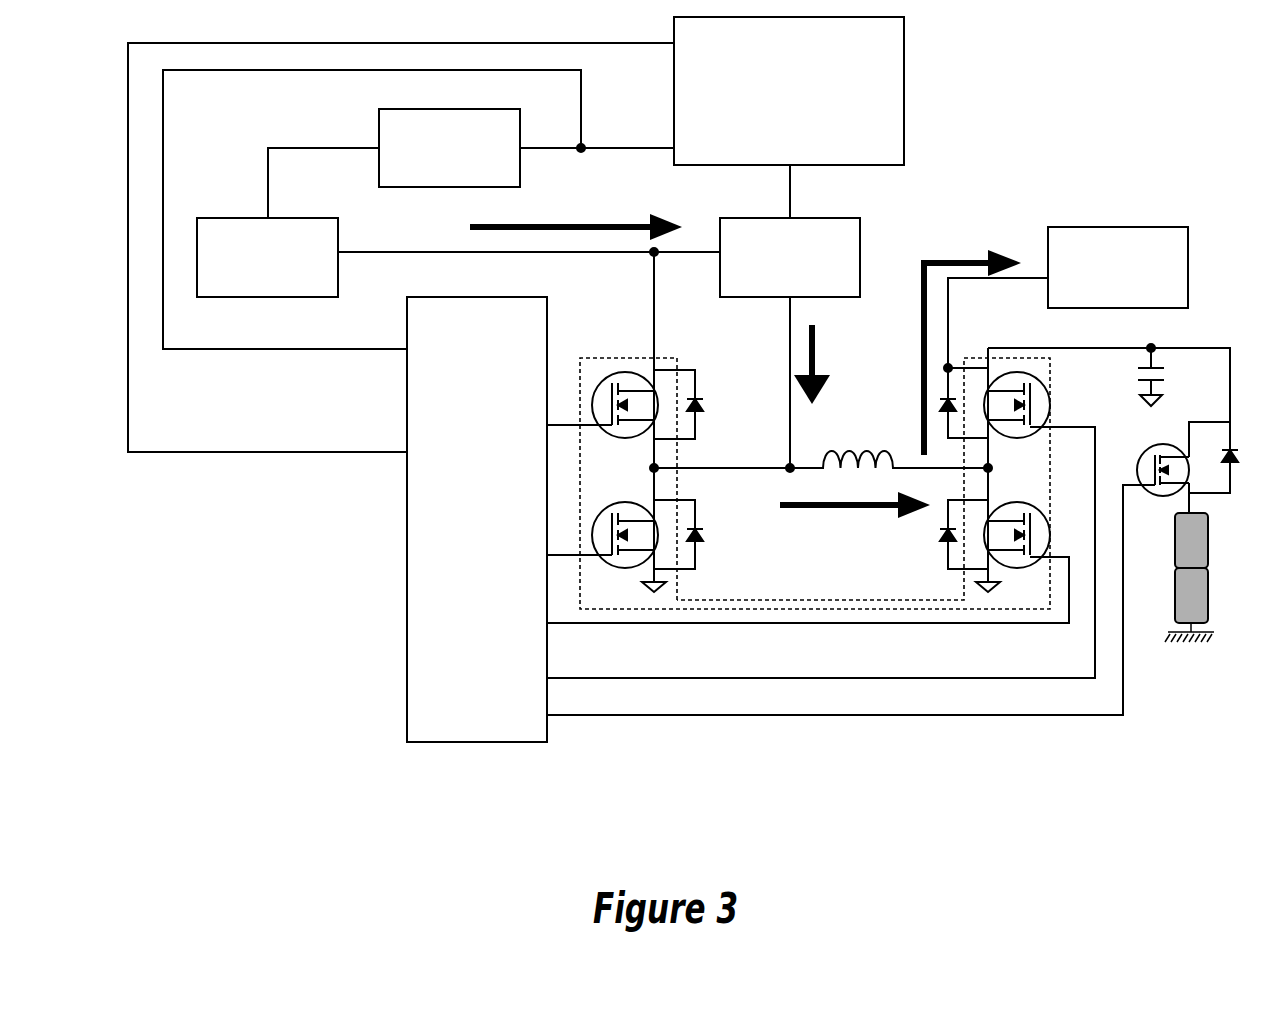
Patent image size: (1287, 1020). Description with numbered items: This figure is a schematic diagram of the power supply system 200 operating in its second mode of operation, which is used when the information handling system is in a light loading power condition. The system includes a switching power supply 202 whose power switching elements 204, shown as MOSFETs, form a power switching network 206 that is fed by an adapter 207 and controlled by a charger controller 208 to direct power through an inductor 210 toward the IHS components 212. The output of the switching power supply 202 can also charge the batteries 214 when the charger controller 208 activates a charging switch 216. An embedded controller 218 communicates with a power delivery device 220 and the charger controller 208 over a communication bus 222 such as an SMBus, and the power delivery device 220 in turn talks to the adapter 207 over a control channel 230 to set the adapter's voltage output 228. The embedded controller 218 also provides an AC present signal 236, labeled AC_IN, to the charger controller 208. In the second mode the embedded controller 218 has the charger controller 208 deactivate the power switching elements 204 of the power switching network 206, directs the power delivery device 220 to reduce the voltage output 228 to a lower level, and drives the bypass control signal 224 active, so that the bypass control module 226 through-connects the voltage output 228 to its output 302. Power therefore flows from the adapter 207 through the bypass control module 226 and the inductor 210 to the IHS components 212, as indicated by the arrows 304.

The power supply system 200 is at (1100, 124).
The switching power supply 202 is at (815, 483).
The power switching elements 204 is at (620, 372).
The power switching network 206 is at (672, 357).
The adapter 207 is at (267, 257).
The charger controller 208 is at (477, 519).
The inductor 210 is at (850, 445).
The IHS components 212 is at (1066, 299).
The batteries 214 is at (1212, 607).
The charging switch 216 is at (1168, 443).
The embedded controller 218 is at (789, 91).
The power delivery device 220 is at (449, 148).
The communication bus 222 is at (612, 153).
The bypass control signal 224 is at (788, 182).
The bypass control module 226 is at (790, 257).
The voltage output 228 is at (417, 255).
The control channel 230 is at (308, 147).
The AC present signal 236 is at (317, 455).
The output of the bypass control module 302 is at (790, 370).
The arrows 304 is at (573, 223).